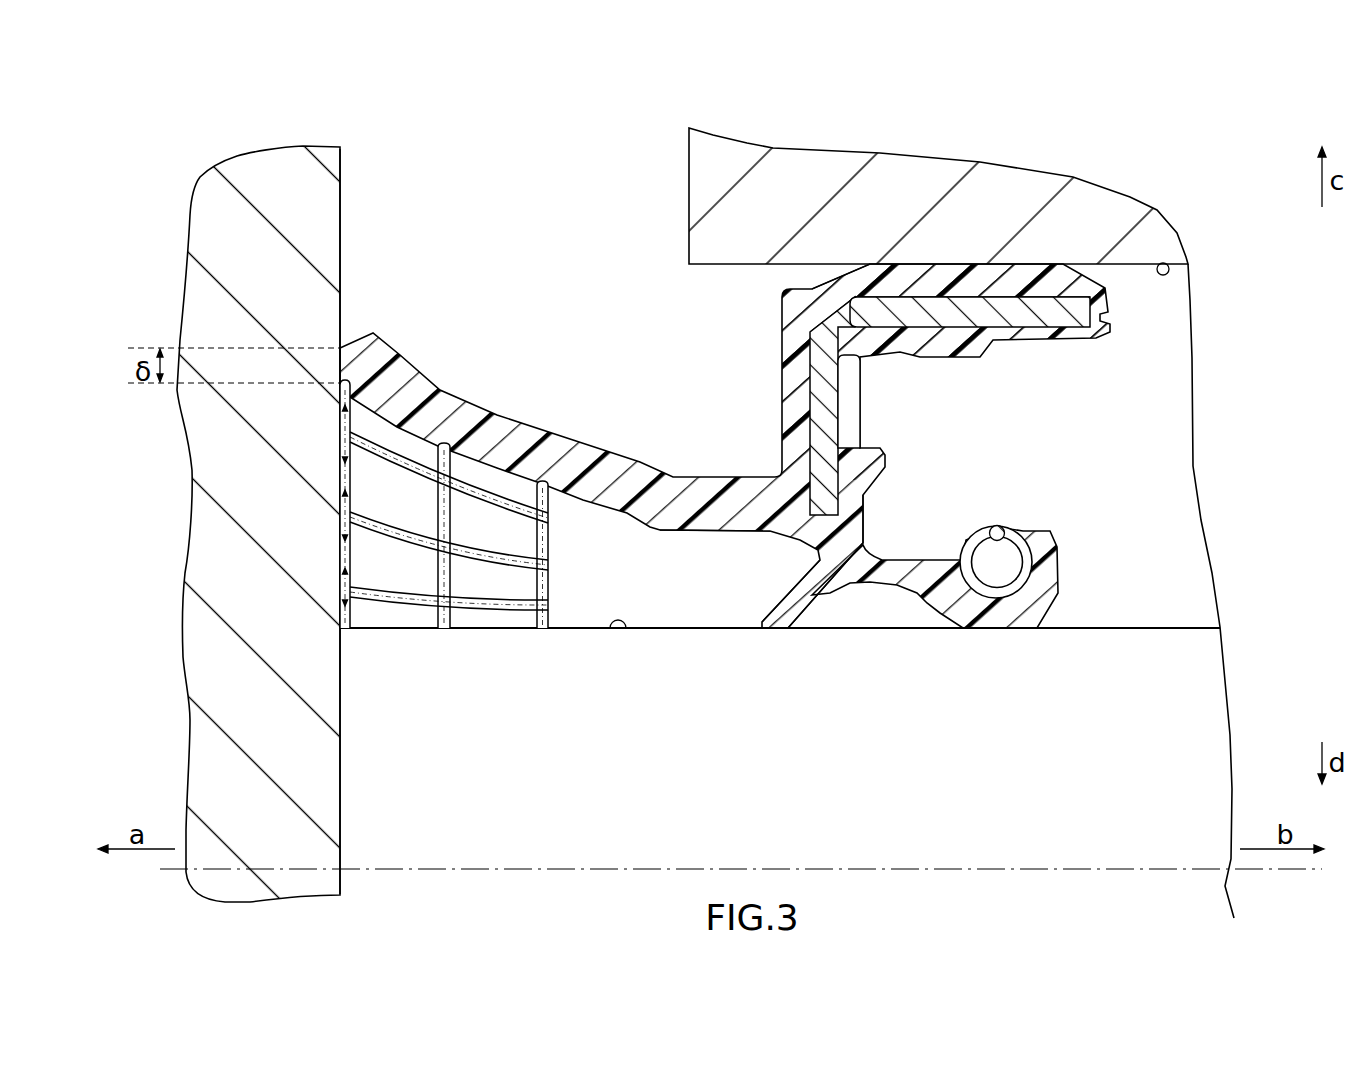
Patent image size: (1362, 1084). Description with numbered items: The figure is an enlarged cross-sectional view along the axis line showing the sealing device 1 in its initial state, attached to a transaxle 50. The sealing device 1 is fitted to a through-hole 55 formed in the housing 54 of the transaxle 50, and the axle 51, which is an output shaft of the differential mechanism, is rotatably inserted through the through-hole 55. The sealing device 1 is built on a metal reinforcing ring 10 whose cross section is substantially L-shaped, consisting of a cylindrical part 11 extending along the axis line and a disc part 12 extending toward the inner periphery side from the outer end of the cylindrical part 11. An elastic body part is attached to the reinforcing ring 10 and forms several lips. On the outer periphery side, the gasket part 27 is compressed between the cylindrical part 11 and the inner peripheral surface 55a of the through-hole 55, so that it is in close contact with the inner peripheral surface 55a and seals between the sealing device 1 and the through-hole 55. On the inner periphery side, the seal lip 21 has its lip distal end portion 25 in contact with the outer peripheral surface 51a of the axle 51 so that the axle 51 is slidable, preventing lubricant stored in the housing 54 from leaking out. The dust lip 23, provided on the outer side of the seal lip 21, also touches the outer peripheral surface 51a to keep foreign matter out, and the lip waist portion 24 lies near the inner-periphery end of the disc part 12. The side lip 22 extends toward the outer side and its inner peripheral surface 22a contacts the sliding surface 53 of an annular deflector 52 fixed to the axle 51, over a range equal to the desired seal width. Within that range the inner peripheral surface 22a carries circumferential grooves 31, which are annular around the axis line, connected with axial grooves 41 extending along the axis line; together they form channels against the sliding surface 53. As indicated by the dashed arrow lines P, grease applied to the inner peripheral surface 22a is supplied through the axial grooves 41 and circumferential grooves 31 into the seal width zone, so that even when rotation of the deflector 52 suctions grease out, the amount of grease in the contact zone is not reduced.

The sealing device 1 is at (797, 404).
The reinforcing ring 10 is at (982, 343).
The cylindrical part 11 is at (1092, 306).
The disc part 12 is at (838, 413).
The seal lip 21 is at (1064, 607).
The side lip 22 is at (522, 392).
The inner peripheral surface 22a is at (688, 598).
The dust lip 23 is at (790, 608).
The lip waist portion 24 is at (847, 537).
The lip distal end portion 25 is at (1016, 615).
The gasket part 27 is at (992, 275).
The circumferential groove 31 is at (352, 629).
The axial groove 41 is at (405, 460).
The transaxle 50 is at (549, 116).
The axle 51 is at (1214, 620).
The outer peripheral surface 51a is at (618, 629).
The deflector 52 is at (360, 152).
The sliding surface 53 is at (343, 222).
The housing 54 is at (672, 151).
The through-hole 55 is at (694, 287).
The inner peripheral surface 55a is at (1163, 263).
The dashed arrow lines P is at (493, 495).